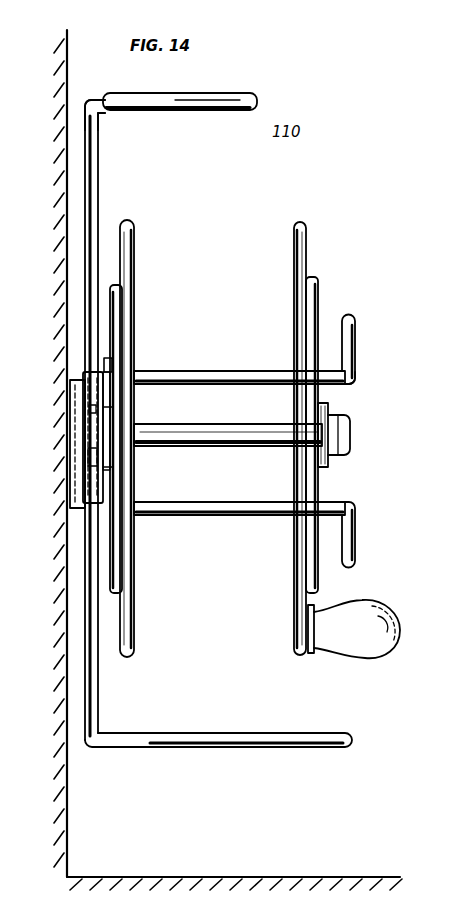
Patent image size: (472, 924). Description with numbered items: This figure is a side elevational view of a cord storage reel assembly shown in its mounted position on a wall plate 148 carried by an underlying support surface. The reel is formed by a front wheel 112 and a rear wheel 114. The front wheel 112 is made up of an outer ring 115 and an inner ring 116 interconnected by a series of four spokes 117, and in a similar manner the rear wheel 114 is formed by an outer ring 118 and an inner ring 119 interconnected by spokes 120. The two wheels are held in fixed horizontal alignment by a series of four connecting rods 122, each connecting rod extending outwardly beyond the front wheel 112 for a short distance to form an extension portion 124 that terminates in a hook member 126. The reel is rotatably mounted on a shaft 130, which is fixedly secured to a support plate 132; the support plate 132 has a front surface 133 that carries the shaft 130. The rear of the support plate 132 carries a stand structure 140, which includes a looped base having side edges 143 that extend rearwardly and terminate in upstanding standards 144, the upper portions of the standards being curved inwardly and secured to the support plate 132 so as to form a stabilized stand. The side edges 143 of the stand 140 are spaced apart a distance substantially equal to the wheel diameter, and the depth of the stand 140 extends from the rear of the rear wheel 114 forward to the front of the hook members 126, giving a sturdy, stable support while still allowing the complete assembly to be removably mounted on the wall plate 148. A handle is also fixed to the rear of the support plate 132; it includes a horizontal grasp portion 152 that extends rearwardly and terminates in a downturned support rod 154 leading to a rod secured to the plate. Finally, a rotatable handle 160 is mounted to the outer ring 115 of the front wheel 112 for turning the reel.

The front wheel 112 is at (297, 425).
The rear wheel 114 is at (148, 425).
The outer ring 115 is at (307, 243).
The inner ring 116 is at (327, 465).
The spokes 117 is at (318, 292).
The outer ring 118 is at (128, 249).
The inner ring 119 is at (121, 413).
The spokes 120 is at (118, 300).
The connecting rods 122 is at (232, 371).
The extension portion 124 is at (338, 385).
The hook member 126 is at (355, 345).
The shaft 130 is at (237, 446).
The support plate 132 is at (88, 437).
The front surface 133 is at (112, 365).
The stand structure 140 is at (218, 441).
The side edges 143 is at (290, 733).
The upstanding standards 144 is at (102, 703).
The wall plate 148 is at (65, 383).
The horizontal grasp portion 152 is at (165, 110).
The downturned support rod 154 is at (97, 176).
The rotatable handle 160 is at (388, 611).